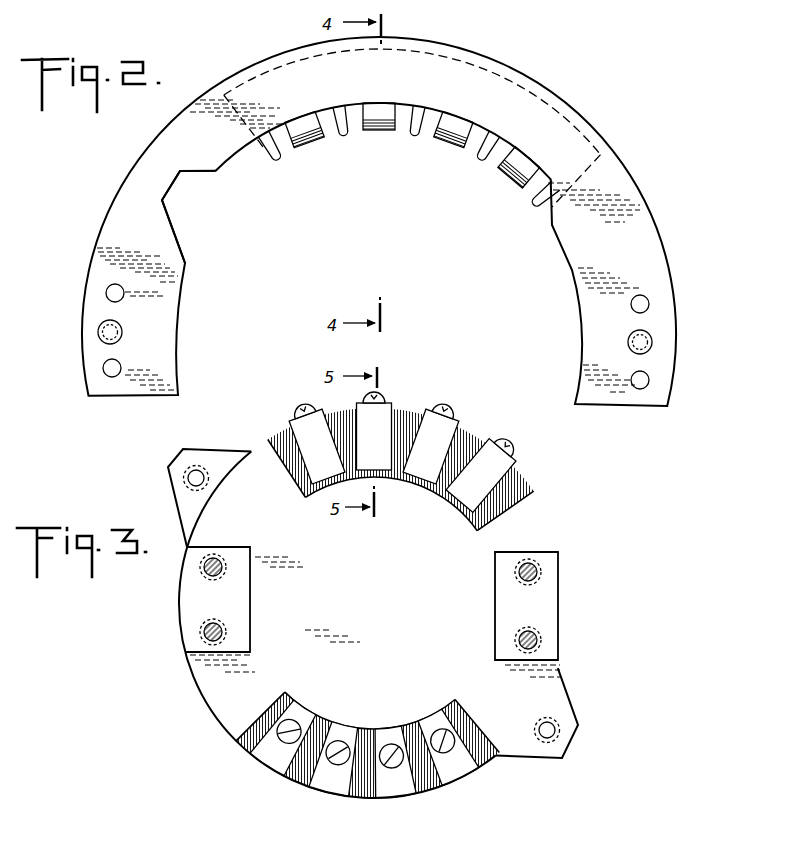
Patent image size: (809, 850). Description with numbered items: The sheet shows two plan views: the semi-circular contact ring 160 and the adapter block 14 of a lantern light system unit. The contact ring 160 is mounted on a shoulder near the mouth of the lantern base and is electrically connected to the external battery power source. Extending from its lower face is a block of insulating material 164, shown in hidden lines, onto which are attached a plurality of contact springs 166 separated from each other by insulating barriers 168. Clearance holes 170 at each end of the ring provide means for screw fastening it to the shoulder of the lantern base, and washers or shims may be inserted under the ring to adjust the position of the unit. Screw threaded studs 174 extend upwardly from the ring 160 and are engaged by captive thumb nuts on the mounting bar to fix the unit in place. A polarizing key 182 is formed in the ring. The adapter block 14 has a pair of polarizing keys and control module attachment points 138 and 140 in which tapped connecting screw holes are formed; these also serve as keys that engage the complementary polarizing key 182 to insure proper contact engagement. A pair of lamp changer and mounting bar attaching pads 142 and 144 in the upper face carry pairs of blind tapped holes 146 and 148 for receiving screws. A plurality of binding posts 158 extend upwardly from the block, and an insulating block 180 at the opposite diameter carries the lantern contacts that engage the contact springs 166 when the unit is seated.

In FIG. 3, the adapter block 14 is at (560, 529).
In FIG. 3, the polarizing key and control module attachment point 138 is at (184, 455).
In FIG. 3, the polarizing key and control module attachment point 140 is at (575, 718).
In FIG. 3, the lamp changer and mounting bar attaching pad 142 is at (186, 600).
In FIG. 3, the lamp changer and mounting bar attaching pad 144 is at (559, 602).
In FIG. 3, the blind tapped holes 146 is at (223, 630).
In FIG. 3, the blind tapped holes 148 is at (518, 634).
In FIG. 3, the binding posts 158 is at (283, 744).
In FIG. 2, the semi-circular contact ring 160 is at (633, 176).
In FIG. 2, the block of insulating material 164 is at (518, 72).
In FIG. 2, the contact springs 166 is at (297, 138).
In FIG. 2, the insulating barriers 168 is at (346, 140).
In FIG. 2, the clearance holes 170 is at (107, 368).
In FIG. 3, the clearance holes 170 is at (304, 403).
In FIG. 2, the screw threaded studs 174 is at (653, 341).
In FIG. 3, the insulating block 180 is at (463, 442).
In FIG. 2, the polarizing key 182 is at (172, 190).